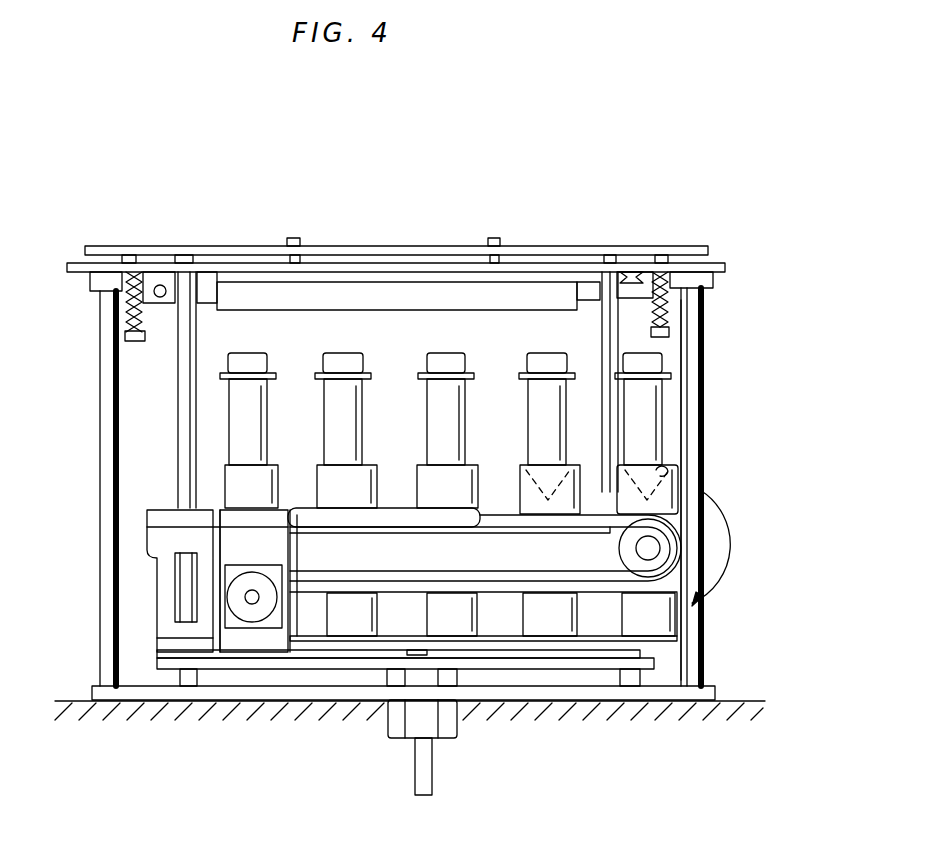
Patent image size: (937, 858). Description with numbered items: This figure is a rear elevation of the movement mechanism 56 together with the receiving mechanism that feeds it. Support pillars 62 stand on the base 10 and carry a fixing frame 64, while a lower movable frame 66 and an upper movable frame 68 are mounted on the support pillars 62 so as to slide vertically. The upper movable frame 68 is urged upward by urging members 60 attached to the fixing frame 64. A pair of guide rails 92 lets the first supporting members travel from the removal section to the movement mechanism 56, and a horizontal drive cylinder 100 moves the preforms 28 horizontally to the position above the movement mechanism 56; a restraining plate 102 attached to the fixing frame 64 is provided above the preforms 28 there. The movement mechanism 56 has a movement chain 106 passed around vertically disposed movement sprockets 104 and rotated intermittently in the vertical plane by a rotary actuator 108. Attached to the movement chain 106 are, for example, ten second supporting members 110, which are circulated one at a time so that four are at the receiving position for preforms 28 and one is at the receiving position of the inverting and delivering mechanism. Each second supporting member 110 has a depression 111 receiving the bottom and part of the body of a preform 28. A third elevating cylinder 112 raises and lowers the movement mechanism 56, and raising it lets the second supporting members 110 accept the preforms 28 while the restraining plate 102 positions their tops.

The base 10 is at (736, 694).
The preforms 28 is at (243, 418).
The movement mechanism 56 is at (730, 460).
The urging members 60 is at (128, 312).
The support pillars 62 is at (98, 495).
The fixing frame 64 is at (641, 246).
The lower movable frame 66 is at (573, 669).
The upper movable frame 68 is at (720, 262).
The guide rails 92 is at (628, 268).
The horizontal drive cylinder 100 is at (170, 288).
The restraining plate 102 is at (380, 287).
The movement sprockets 104 is at (670, 551).
The movement chain 106 is at (640, 585).
The rotary actuator 108 is at (252, 613).
The second supporting members 110 is at (522, 472).
The depressions 111 is at (655, 480).
The third elevating cylinder 112 is at (450, 722).